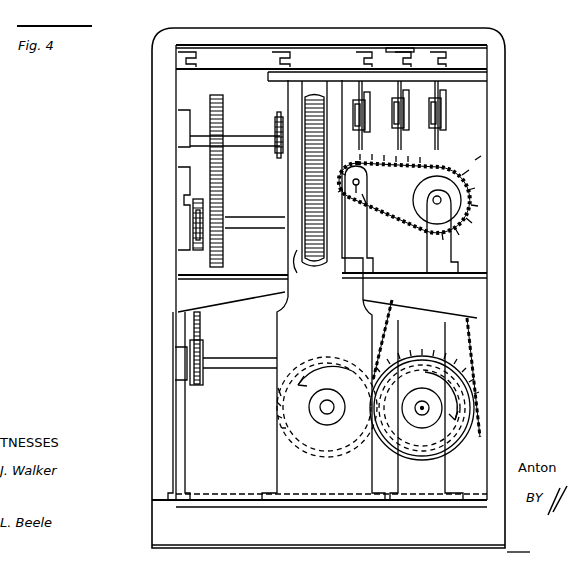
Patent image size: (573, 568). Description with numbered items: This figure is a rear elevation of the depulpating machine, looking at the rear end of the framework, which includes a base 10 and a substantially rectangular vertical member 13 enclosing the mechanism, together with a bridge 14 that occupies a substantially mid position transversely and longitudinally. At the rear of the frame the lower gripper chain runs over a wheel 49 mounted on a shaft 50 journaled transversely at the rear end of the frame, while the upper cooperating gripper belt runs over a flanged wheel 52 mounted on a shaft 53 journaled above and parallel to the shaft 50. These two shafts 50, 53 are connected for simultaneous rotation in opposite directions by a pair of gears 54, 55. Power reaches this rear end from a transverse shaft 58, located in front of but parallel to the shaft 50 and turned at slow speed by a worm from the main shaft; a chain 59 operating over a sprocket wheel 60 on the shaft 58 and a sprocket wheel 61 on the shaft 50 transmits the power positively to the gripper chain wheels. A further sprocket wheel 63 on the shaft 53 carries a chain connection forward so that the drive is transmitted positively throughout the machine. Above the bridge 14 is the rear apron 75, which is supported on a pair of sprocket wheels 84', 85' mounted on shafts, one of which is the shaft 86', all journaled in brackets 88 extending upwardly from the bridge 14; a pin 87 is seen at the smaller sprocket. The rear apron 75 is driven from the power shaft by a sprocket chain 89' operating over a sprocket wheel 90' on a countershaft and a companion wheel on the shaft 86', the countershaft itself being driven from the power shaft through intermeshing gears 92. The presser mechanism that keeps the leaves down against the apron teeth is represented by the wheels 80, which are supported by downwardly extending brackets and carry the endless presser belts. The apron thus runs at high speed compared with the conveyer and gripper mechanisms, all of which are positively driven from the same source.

The base 10 is at (217, 524).
The vertical member 13 is at (476, 38).
The bridge 14 is at (253, 295).
The wheel 49 is at (311, 187).
The shaft 50 is at (263, 222).
The flanged wheel 52 is at (313, 118).
The shaft 53 is at (250, 134).
The gear 54 is at (224, 207).
The gear 55 is at (224, 127).
The transverse shaft 58 is at (237, 362).
The chain 59 is at (201, 321).
The sprocket wheel 60 is at (203, 352).
The sprocket wheel 61 is at (195, 203).
The sprocket wheel 63 is at (273, 158).
The rear apron 75 is at (447, 161).
The wheels 80 is at (407, 140).
The sprocket wheel 84' is at (439, 189).
The sprocket wheel 85' is at (376, 184).
The shaft 86' is at (478, 200).
The pin 87 is at (355, 205).
The brackets 88 is at (363, 246).
The sprocket chain 89' is at (458, 377).
The sprocket wheel 90' is at (395, 340).
The intermeshing gears 92 is at (278, 401).